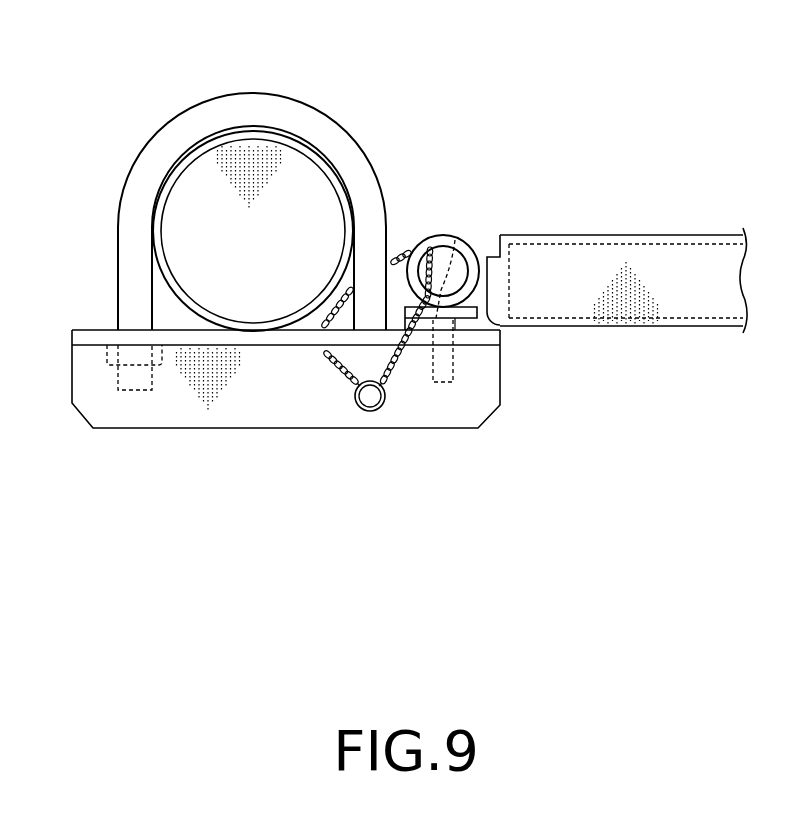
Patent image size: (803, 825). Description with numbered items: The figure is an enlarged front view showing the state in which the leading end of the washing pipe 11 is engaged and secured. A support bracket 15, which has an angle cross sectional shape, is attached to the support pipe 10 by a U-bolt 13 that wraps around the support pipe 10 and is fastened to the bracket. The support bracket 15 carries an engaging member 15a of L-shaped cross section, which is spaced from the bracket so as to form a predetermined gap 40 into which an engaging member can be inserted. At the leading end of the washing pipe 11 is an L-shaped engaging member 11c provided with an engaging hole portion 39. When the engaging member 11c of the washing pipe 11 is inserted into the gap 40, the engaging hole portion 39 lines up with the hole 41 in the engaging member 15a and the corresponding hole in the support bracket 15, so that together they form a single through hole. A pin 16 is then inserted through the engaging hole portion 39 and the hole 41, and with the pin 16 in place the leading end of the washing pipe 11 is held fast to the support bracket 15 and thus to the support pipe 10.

The support pipe 10 is at (180, 245).
The washing pipe 11 is at (633, 237).
The engaging member 11c is at (440, 330).
The U-bolt 13 is at (257, 110).
The support bracket 15 is at (277, 390).
The engaging member 15a is at (473, 253).
The pin 16 is at (433, 237).
The engaging hole portion 39 is at (433, 372).
The gap 40 is at (450, 318).
The hole 41 is at (455, 240).